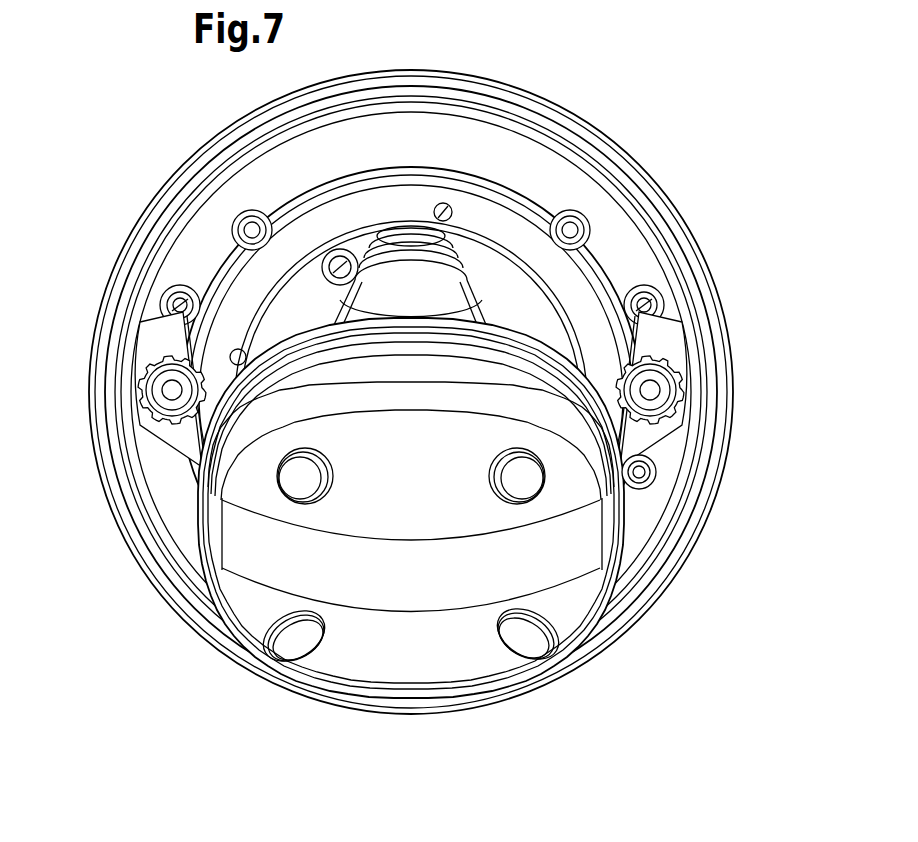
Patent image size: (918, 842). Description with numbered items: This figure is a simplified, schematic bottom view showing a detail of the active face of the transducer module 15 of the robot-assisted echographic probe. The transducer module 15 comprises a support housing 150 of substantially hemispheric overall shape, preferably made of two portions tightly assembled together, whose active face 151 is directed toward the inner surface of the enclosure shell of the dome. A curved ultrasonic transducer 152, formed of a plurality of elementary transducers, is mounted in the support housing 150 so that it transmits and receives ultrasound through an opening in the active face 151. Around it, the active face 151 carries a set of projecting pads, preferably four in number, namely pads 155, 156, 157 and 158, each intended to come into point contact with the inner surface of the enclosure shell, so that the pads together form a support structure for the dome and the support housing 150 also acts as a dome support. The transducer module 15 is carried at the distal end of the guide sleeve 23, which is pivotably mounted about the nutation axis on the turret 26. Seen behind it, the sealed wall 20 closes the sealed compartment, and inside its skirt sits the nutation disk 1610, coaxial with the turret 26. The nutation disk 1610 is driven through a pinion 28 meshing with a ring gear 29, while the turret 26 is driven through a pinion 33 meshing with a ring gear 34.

The transducer module 15 is at (210, 612).
The sealed wall 20 is at (625, 237).
The guide sleeve 23 is at (410, 300).
The turret 26 is at (293, 307).
The pinion 28 is at (112, 399).
The ring gear 29 is at (175, 448).
The pinion 33 is at (685, 369).
The ring gear 34 is at (708, 377).
The nutation disk 1610 is at (490, 200).
The support housing 150 is at (429, 542).
The active face 151 is at (582, 492).
The curved ultrasonic transducer 152 is at (414, 588).
The pad 155 is at (292, 477).
The pad 156 is at (532, 470).
The pad 157 is at (540, 655).
The pad 158 is at (292, 652).